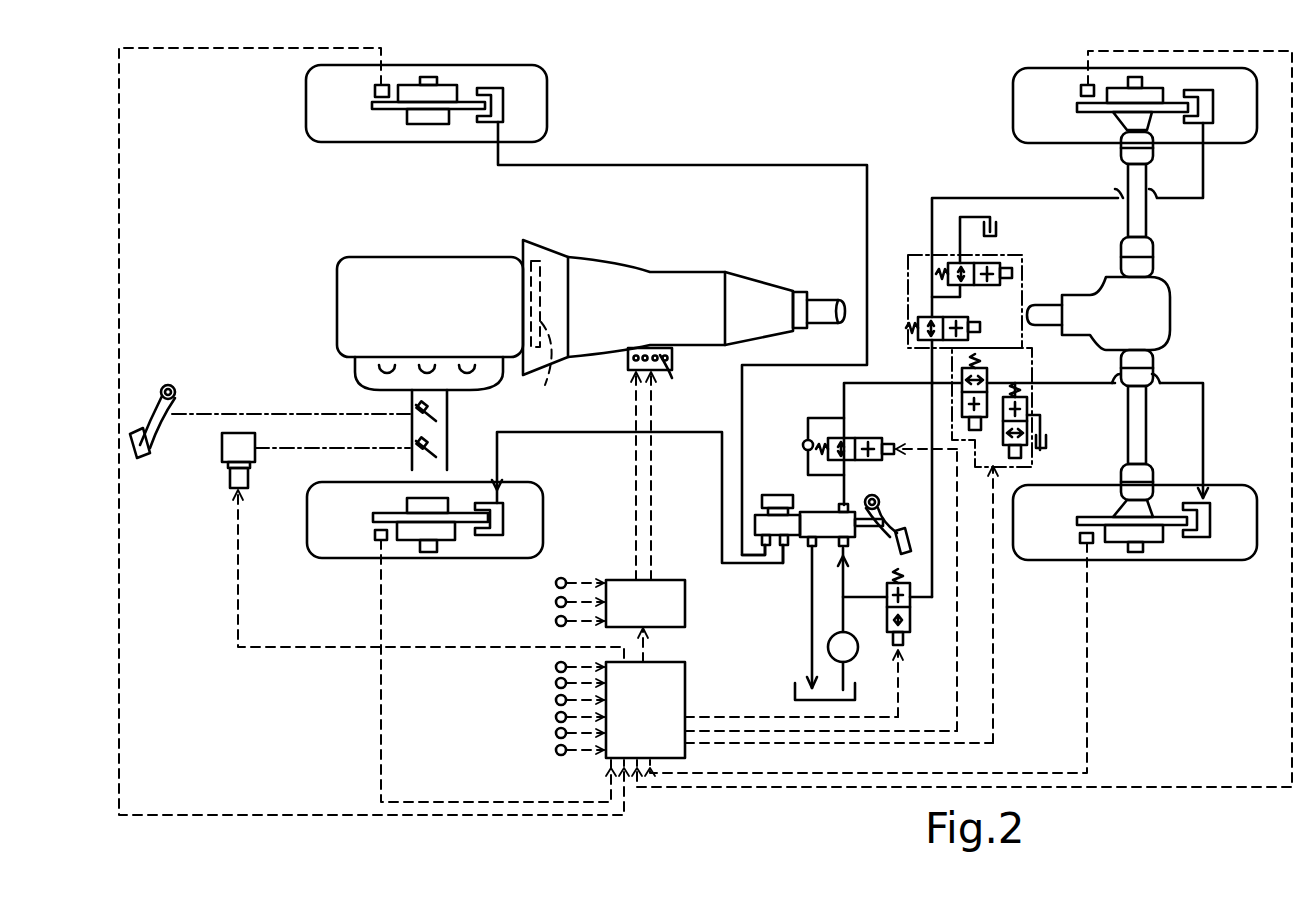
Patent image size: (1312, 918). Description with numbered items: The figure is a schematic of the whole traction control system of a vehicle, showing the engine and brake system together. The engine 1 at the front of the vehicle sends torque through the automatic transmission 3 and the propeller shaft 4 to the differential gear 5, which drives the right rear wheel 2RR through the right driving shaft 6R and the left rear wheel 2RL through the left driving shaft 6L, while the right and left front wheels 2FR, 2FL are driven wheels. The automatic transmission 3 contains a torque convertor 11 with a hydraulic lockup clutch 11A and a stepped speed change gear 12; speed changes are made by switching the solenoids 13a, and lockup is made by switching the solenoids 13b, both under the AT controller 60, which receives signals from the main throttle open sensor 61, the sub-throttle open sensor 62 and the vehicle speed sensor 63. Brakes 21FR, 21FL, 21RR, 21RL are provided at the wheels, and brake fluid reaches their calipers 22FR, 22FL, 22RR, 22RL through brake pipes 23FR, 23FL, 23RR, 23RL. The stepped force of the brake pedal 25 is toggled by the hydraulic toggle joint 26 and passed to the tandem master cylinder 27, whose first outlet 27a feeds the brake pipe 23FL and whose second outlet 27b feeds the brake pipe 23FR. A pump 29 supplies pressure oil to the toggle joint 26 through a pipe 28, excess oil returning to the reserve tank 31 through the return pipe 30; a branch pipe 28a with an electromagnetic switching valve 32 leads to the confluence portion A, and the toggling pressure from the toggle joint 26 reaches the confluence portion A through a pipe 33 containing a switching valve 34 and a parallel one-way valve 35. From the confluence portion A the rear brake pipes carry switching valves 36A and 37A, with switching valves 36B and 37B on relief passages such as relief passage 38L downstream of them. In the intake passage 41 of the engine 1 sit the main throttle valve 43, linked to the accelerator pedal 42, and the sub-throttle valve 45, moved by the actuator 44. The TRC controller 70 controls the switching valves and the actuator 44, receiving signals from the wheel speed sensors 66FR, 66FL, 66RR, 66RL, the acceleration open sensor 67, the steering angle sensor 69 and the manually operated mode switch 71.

The engine 1 is at (403, 257).
The automatic transmission 3 is at (680, 272).
The propeller shaft 4 is at (822, 300).
The differential gear 5 is at (1172, 305).
The right driving shaft 6R is at (1147, 178).
The left driving shaft 6L is at (1147, 435).
The torque convertor 11 is at (545, 252).
The lockup clutch 11A is at (552, 338).
The stepped speed change gear 12 is at (625, 282).
The solenoids 13a is at (630, 372).
The solenoids 13b is at (668, 368).
The right front wheel 2FR is at (306, 100).
The left front wheel 2FL is at (307, 540).
The right rear wheel 2RR is at (1013, 75).
The left rear wheel 2RL is at (1250, 560).
The brake 21FR is at (470, 80).
The brake 21FL is at (456, 547).
The brake 21RR is at (1170, 85).
The brake 21RL is at (1168, 548).
The caliper 22FR is at (505, 92).
The caliper 22FL is at (505, 518).
The caliper 22RR is at (1205, 126).
The caliper 22RL is at (1212, 503).
The brake pipe 23FR is at (603, 165).
The brake pipe 23FL is at (578, 433).
The brake pipe 23RR is at (1060, 198).
The brake pipe 23RL is at (1210, 418).
The wheel speed sensor 66FR is at (388, 84).
The wheel speed sensor 66FL is at (374, 542).
The wheel speed sensor 66RR is at (1078, 86).
The wheel speed sensor 66RL is at (1080, 545).
The brake pedal 25 is at (908, 540).
The hydraulic toggle joint 26 is at (826, 522).
The tandem master cylinder 27 is at (776, 495).
The first outlet 27a is at (786, 560).
The second outlet 27b is at (745, 548).
The pipe 28 is at (843, 605).
The branch pipe 28a is at (926, 674).
The pump 29 is at (855, 660).
The return pipe 30 is at (810, 650).
The reserve tank 31 is at (795, 690).
The electromagnetic switching valve 32 is at (890, 585).
The pipe 33 is at (862, 383).
The electromagnetic switching valve 34 is at (875, 438).
The one-way valve 35 is at (803, 441).
The electromagnetic switching valve 36A is at (990, 380).
The electromagnetic switching valve 36B is at (1030, 410).
The electromagnetic switching valve 37A is at (950, 318).
The electromagnetic switching valve 37B is at (1005, 285).
The relief passage 38L is at (1045, 445).
The intake passage 41 is at (410, 432).
The accelerator pedal 42 is at (140, 455).
The main throttle valve 43 is at (440, 418).
The actuator 44 is at (222, 455).
The sub-throttle valve 45 is at (440, 453).
The AT controller 60 is at (686, 612).
The main throttle open sensor 61 is at (556, 667).
The sub-throttle open sensor 62 is at (556, 683).
The vehicle speed sensor 63 is at (556, 700).
The acceleration open sensor 67 is at (556, 717).
The steering angle sensor 69 is at (556, 733).
The TRC controller 70 is at (686, 690).
The mode switch 71 is at (557, 753).
The confluence portion A is at (932, 383).